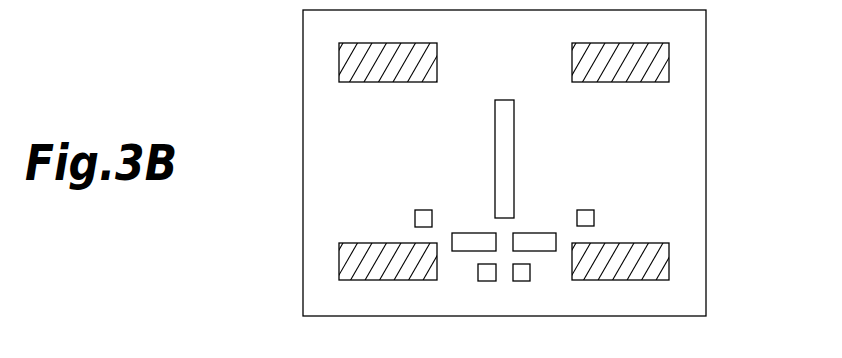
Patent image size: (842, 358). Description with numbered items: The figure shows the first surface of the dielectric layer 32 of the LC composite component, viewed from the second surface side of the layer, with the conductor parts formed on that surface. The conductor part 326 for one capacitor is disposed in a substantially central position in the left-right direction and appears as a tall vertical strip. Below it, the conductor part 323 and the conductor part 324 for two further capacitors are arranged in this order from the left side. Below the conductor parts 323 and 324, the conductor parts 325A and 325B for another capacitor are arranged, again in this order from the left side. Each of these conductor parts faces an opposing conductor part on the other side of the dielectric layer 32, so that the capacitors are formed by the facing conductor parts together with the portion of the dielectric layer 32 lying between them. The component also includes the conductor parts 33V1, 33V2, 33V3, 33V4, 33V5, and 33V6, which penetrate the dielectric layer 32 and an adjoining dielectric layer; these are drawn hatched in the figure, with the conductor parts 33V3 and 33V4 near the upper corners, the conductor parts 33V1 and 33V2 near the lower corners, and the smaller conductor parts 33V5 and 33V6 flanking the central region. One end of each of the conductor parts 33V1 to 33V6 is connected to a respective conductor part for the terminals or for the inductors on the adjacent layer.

The dielectric layer 32 is at (706, 10).
The conductor part 33V3 is at (339, 63).
The conductor part 33V4 is at (669, 63).
The conductor part 33V1 is at (339, 260).
The conductor part 33V2 is at (669, 261).
The conductor part for the capacitor 326 is at (514, 159).
The conductor part 33V5 is at (415, 216).
The conductor part 33V6 is at (594, 216).
The conductor part for the capacitor 323 is at (452, 238).
The conductor part for the capacitor 324 is at (556, 239).
The conductor part for the capacitor 325A is at (487, 282).
The conductor part for the capacitor 325B is at (521, 282).